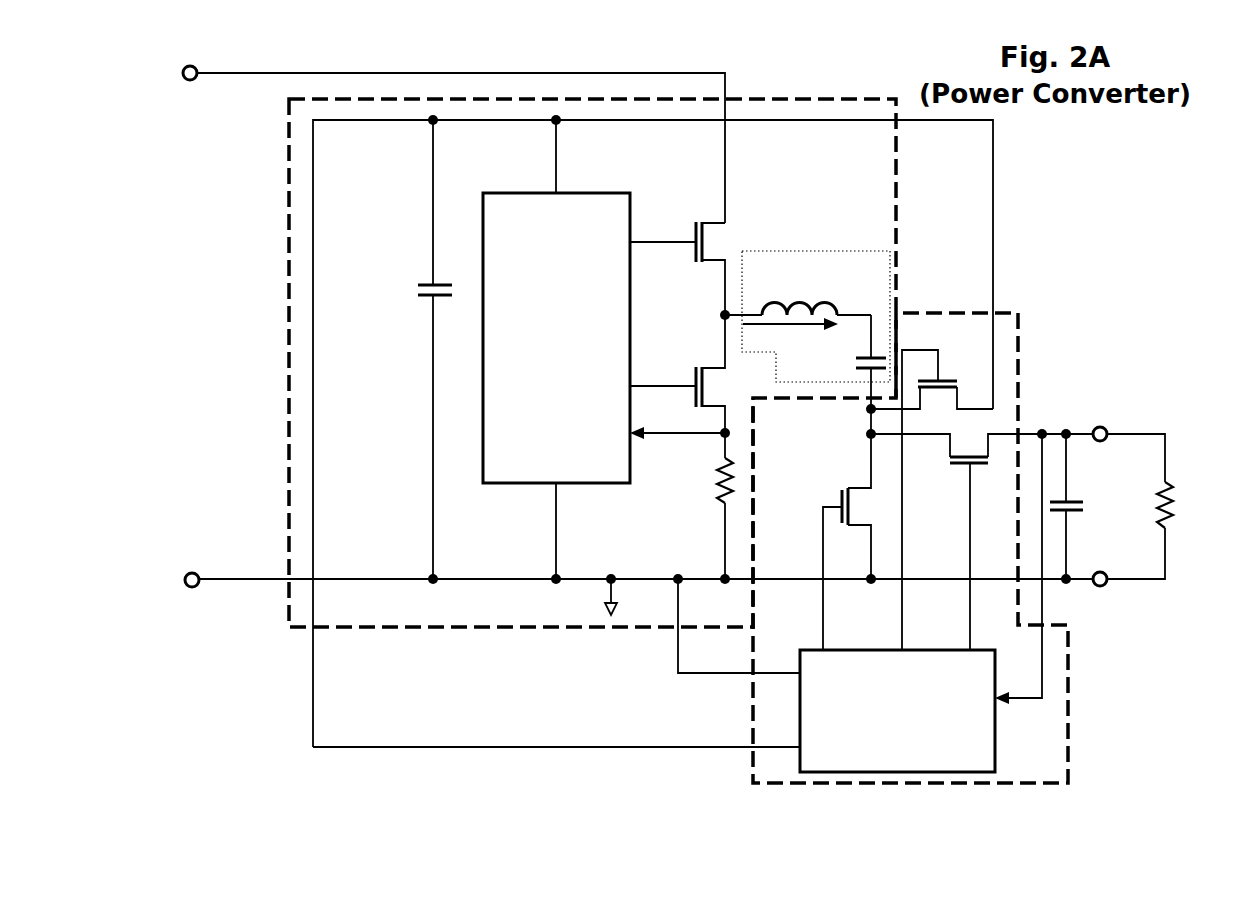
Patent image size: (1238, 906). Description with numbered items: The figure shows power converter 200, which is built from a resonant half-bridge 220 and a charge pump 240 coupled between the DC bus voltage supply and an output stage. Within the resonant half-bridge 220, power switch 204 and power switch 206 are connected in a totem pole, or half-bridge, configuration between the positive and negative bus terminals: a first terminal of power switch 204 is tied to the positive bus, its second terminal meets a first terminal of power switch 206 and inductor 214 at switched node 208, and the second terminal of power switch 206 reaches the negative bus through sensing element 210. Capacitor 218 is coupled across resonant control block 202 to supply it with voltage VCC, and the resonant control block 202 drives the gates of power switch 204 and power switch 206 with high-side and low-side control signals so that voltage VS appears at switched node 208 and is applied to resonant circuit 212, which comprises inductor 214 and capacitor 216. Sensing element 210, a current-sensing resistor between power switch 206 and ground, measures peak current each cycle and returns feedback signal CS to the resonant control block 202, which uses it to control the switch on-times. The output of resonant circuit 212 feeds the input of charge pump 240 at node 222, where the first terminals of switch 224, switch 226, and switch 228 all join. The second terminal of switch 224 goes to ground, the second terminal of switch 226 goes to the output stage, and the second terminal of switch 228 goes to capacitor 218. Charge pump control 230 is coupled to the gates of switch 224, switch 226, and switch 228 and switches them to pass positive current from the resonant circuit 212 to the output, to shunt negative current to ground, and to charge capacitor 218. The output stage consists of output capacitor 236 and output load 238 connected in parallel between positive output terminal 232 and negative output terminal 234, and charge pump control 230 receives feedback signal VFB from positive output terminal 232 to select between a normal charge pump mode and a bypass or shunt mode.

The power converter 200 is at (1074, 196).
The resonant control block 202 is at (537, 392).
The power switch 204 is at (697, 259).
The power switch 206 is at (697, 376).
The switched node 208 is at (725, 315).
The sensing element 210 is at (698, 508).
The resonant circuit 212 is at (870, 251).
The inductor 214 is at (798, 283).
The capacitor 216 is at (844, 364).
The capacitor 218 is at (399, 349).
The resonant half-bridge 220 is at (662, 636).
The node 222 is at (871, 434).
The switch 224 is at (837, 542).
The switch 226 is at (981, 542).
The switch 228 is at (932, 489).
The charge pump control 230 is at (878, 752).
The positive output terminal 232 is at (1103, 408).
The negative output terminal 234 is at (1110, 610).
The output capacitor 236 is at (1091, 506).
The output load 238 is at (1161, 506).
The charge pump 240 is at (1028, 792).